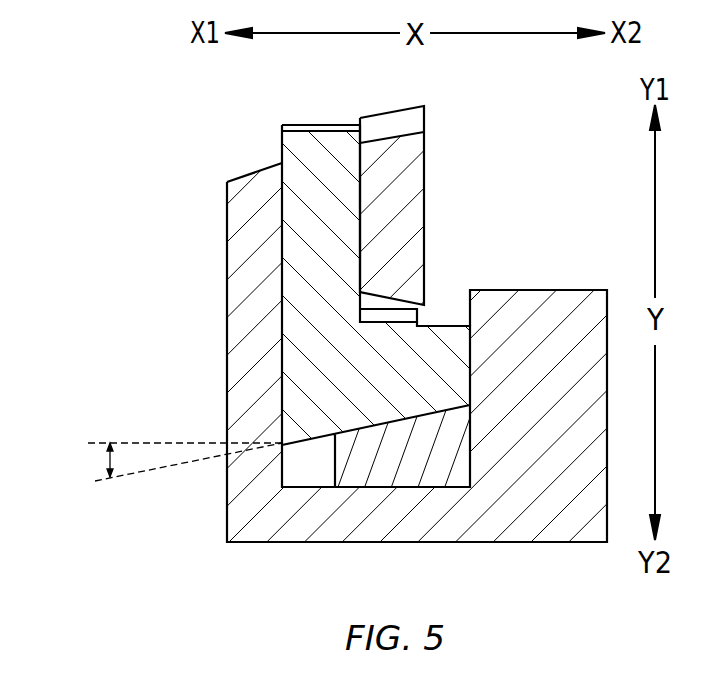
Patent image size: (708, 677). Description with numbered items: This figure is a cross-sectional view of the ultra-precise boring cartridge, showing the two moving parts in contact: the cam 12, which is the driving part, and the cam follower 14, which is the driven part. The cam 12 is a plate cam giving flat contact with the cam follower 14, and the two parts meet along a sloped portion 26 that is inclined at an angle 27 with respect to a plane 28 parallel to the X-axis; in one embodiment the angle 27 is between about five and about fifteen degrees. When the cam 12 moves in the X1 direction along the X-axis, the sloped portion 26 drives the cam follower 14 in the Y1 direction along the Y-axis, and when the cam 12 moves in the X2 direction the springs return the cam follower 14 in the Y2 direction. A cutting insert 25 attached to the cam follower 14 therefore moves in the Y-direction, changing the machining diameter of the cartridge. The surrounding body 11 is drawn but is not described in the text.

The housing 11 is at (219, 303).
The cam 12 is at (382, 462).
The cam follower 14 is at (307, 118).
The cutting insert 25 is at (430, 177).
The sloped portion 26 is at (418, 427).
The angle 27 is at (107, 462).
The plane 28 is at (175, 443).